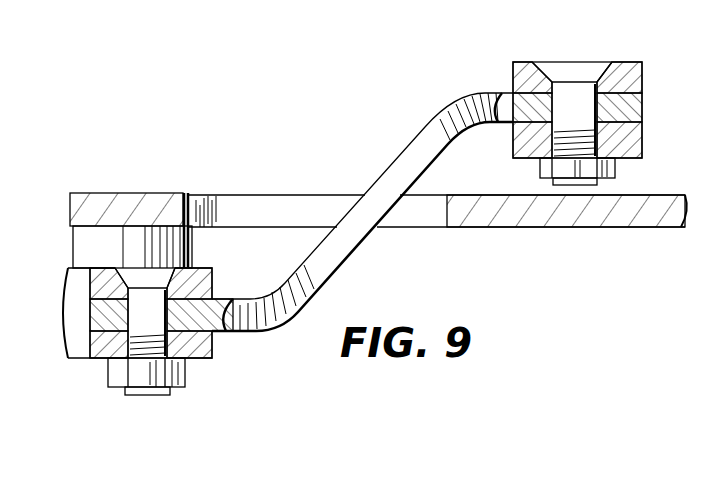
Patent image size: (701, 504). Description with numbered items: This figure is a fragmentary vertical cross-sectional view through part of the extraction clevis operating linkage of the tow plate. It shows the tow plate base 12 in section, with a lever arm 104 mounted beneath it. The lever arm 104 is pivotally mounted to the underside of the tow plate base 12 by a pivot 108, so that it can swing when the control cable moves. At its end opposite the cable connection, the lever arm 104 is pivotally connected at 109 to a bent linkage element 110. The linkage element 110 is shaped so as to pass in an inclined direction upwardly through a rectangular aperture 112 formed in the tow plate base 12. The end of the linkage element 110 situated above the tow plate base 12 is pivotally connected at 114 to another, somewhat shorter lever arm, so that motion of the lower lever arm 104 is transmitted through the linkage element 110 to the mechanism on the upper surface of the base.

The tow plate base 12 is at (106, 205).
The rectangular aperture 112 is at (221, 210).
The bent linkage element 110 is at (365, 212).
The pivot 108 is at (173, 251).
The lever arm 104 is at (83, 343).
The pivotal connection 109 is at (165, 393).
The pivotal connection 114 is at (580, 62).